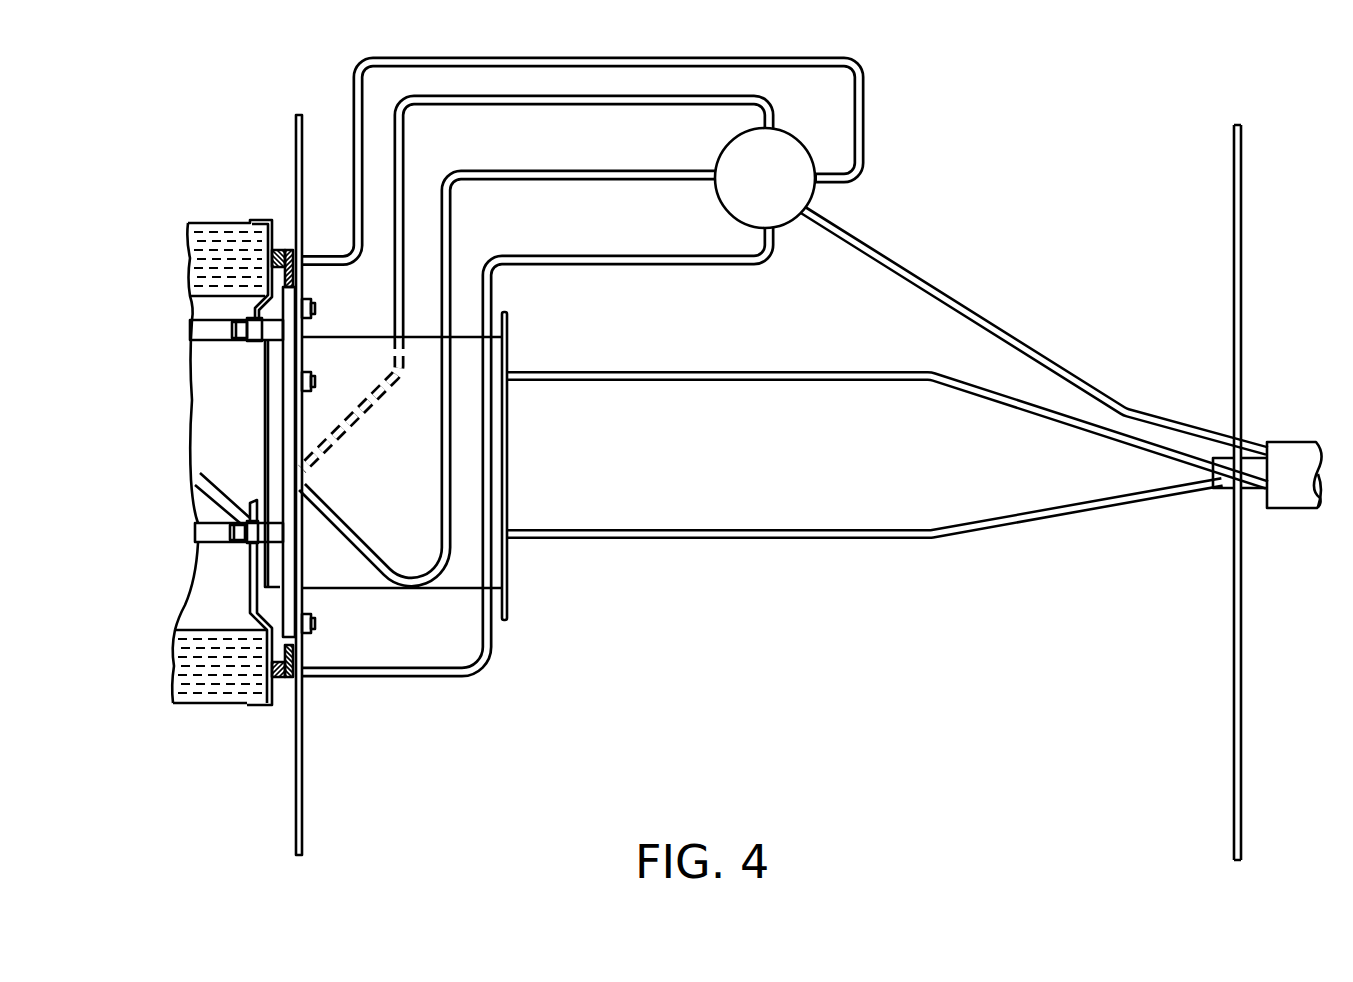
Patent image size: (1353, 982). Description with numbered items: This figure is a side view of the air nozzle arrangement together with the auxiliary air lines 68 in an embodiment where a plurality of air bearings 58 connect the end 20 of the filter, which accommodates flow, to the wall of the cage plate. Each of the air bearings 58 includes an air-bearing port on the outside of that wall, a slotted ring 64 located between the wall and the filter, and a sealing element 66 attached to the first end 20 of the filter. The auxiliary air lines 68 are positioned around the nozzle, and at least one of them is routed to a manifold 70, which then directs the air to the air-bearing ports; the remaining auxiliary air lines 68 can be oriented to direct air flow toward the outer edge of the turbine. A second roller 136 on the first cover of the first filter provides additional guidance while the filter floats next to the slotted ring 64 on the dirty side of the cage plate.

The end of the filter 20 is at (253, 613).
The air bearings 58 is at (316, 746).
The slotted ring 64 is at (290, 250).
The sealing element 66 is at (283, 250).
The auxiliary air lines 68 is at (1067, 503).
The manifold 70 is at (805, 193).
The second roller 136 is at (258, 342).